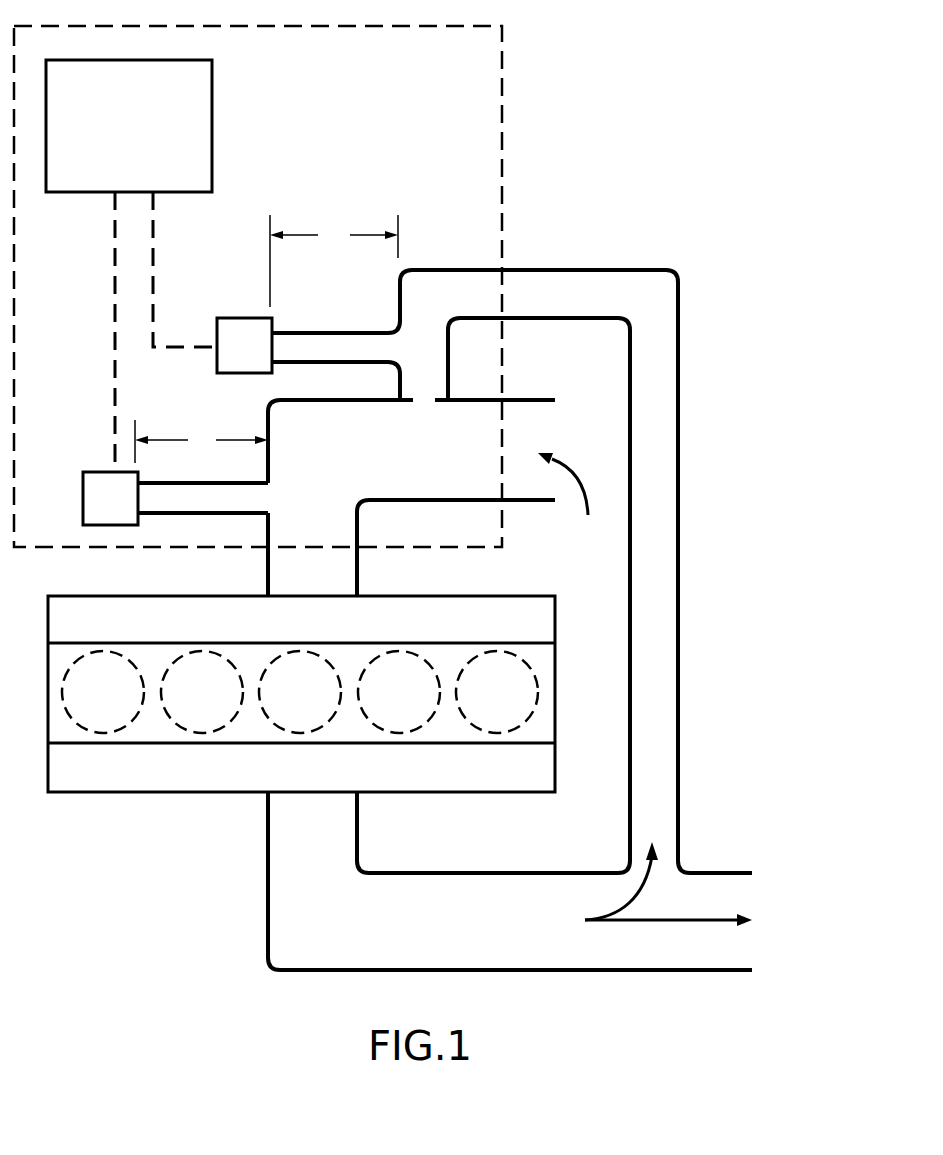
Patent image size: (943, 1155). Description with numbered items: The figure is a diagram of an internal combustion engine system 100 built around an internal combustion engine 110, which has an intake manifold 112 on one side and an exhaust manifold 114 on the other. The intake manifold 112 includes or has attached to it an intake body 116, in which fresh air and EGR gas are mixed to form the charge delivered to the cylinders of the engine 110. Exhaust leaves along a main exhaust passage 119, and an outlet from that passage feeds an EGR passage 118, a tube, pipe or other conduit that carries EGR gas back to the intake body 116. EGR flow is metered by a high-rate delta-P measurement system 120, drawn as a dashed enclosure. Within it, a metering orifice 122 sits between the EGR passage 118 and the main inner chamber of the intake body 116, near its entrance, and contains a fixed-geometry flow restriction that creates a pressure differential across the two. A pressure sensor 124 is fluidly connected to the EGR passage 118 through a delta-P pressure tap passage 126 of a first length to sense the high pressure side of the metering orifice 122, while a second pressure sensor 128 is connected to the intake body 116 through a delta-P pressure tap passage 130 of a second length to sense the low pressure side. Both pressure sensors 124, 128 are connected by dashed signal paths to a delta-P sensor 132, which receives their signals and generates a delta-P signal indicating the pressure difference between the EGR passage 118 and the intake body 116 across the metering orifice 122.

The internal combustion engine system 100 is at (601, 137).
The internal combustion engine 110 is at (319, 704).
The intake manifold 112 is at (314, 632).
The exhaust manifold 114 is at (317, 779).
The intake body 116 is at (369, 461).
The EGR passage 118 is at (547, 307).
The main exhaust passage 119 is at (442, 929).
The delta-P measurement system 120 is at (474, 67).
The metering orifice 122 is at (425, 407).
The pressure sensor 124 is at (234, 318).
The delta-P pressure tap passage 126 is at (349, 357).
The pressure sensor 128 is at (88, 470).
The delta-P pressure tap passage 130 is at (209, 507).
The delta-P sensor 132 is at (112, 146).